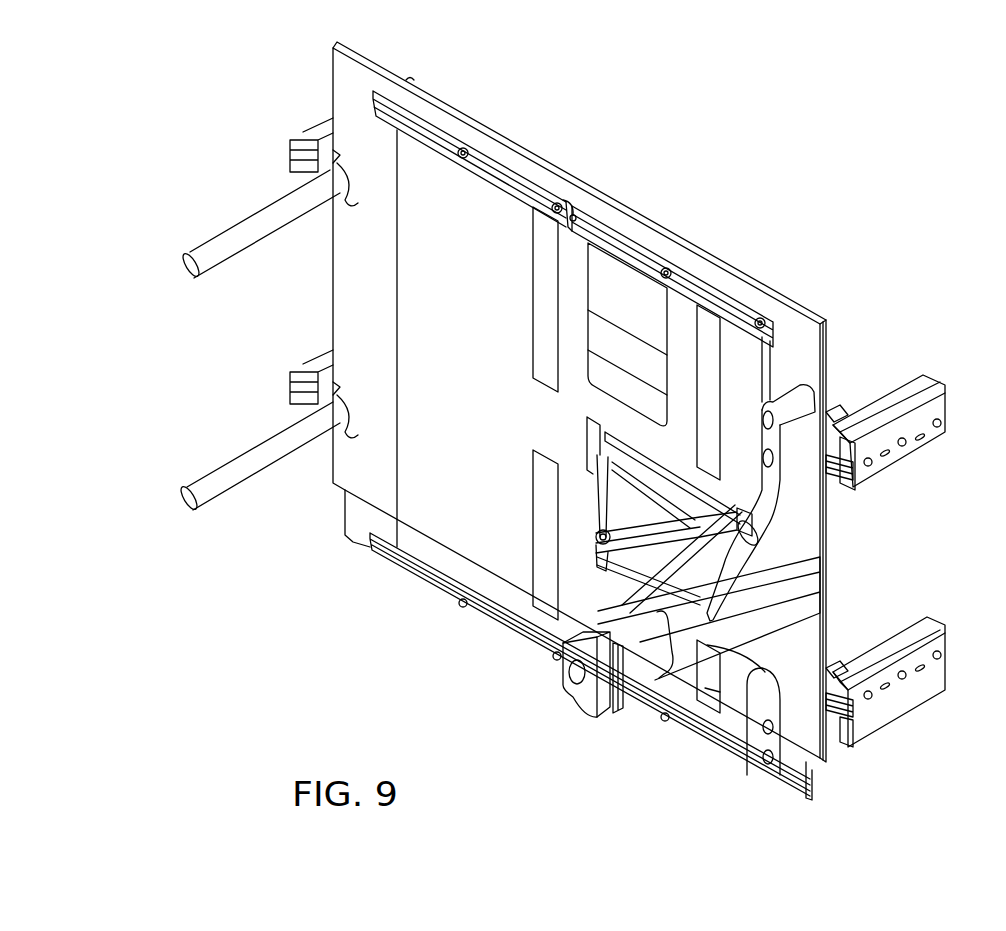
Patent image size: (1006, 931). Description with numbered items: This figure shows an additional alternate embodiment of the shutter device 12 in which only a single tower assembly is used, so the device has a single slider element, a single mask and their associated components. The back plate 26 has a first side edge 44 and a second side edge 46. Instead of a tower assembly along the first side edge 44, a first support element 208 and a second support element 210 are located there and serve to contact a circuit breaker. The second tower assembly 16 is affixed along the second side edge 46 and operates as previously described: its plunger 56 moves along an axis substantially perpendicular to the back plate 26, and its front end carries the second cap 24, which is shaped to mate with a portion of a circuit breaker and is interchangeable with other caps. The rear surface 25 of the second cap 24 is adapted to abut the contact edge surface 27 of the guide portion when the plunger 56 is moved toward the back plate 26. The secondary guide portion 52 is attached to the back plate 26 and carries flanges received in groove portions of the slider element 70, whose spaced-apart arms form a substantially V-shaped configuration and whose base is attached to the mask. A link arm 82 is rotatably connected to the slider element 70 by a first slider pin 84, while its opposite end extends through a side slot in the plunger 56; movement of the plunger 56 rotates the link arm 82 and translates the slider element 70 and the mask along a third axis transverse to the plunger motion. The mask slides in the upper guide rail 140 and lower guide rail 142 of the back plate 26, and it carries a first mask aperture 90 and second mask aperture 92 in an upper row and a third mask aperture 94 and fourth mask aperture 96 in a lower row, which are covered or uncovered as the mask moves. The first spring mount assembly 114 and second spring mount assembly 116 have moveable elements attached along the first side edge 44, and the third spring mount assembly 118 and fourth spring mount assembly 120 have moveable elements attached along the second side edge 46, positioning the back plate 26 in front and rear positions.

The shutter device 12 is at (784, 154).
The second tower assembly 16 is at (466, 648).
The second cap 24 is at (563, 693).
The rear surface 25 is at (630, 707).
The back plate 26 is at (371, 50).
The contact edge surface 27 is at (670, 677).
The first side edge 44 is at (333, 68).
The second side edge 46 is at (828, 337).
The secondary guide portion 52 is at (592, 450).
The plunger 56 is at (643, 660).
The slider element 70 is at (588, 506).
The link arm 82 is at (625, 578).
The first slider pin 84 is at (600, 537).
The first mask aperture 90 is at (547, 230).
The second mask aperture 92 is at (712, 330).
The third mask aperture 94 is at (543, 580).
The fourth mask aperture 96 is at (722, 692).
The first spring mount assembly 114 is at (303, 131).
The second spring mount assembly 116 is at (303, 370).
The third spring mount assembly 118 is at (930, 376).
The fourth spring mount assembly 120 is at (928, 618).
The upper guide rail 140 is at (486, 152).
The lower guide rail 142 is at (387, 567).
The first support element 208 is at (193, 248).
The second support element 210 is at (203, 497).